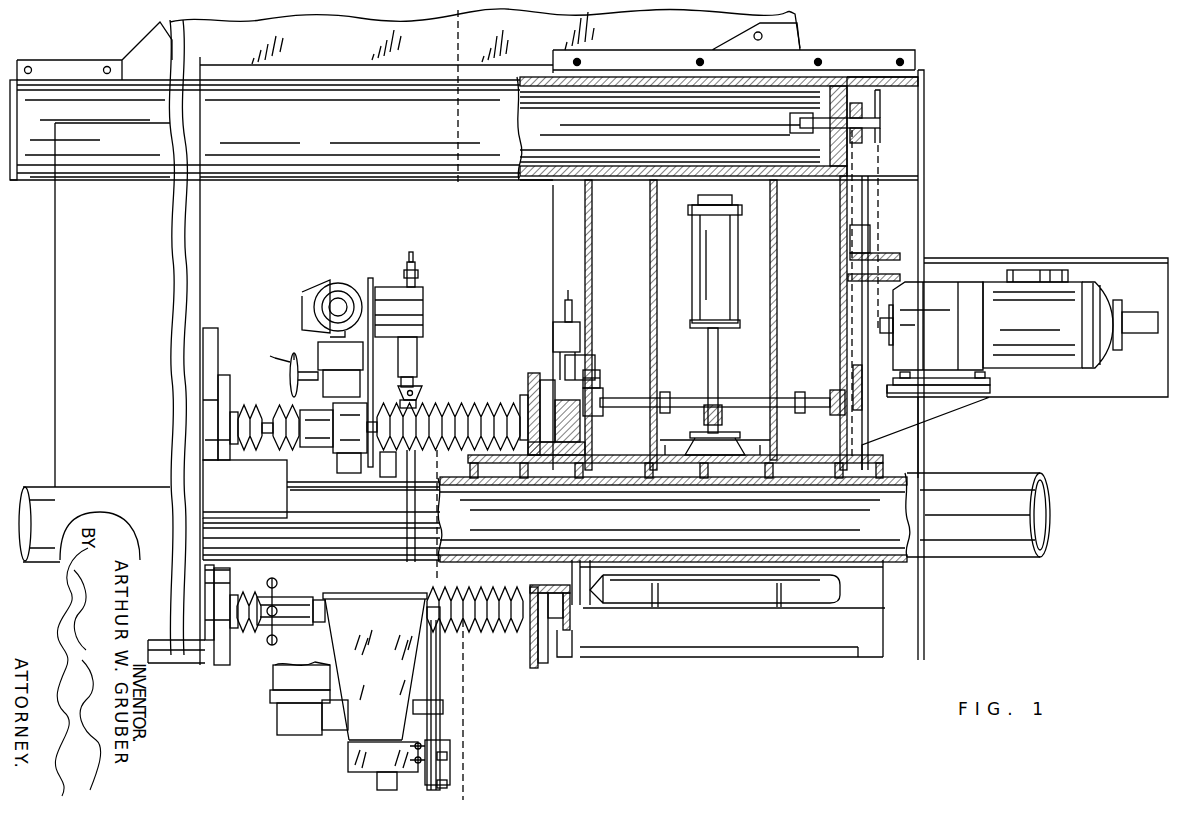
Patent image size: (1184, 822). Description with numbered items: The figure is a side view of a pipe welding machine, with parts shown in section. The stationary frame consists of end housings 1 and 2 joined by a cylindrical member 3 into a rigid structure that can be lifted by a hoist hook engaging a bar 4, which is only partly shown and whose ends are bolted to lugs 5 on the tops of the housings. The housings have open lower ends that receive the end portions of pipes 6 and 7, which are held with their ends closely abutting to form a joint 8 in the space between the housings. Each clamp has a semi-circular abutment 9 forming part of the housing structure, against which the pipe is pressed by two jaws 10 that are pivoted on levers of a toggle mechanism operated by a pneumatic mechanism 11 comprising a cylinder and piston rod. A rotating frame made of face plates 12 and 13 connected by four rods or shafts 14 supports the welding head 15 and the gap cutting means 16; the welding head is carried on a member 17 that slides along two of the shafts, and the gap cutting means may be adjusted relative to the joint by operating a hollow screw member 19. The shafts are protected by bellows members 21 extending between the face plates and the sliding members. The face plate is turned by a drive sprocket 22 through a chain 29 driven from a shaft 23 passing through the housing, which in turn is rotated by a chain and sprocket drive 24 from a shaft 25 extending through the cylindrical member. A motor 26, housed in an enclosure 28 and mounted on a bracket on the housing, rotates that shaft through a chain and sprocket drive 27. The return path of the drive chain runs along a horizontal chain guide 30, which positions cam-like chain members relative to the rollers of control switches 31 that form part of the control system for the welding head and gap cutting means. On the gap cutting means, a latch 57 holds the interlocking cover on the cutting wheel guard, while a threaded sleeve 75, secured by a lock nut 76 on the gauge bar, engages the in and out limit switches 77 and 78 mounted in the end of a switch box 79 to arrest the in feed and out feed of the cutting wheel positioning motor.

The end housing 1 is at (553, 240).
The end housing 2 is at (204, 236).
The cylindrical member 3 is at (410, 168).
The bar 4 is at (485, 36).
The lugs 5 is at (146, 62).
The pipe 6 is at (962, 480).
The pipe 7 is at (45, 488).
The joint 8 is at (405, 507).
The semi-circular abutment 9 is at (882, 456).
The jaws 10 is at (790, 597).
The pneumatic mechanism 11 is at (718, 355).
The face plate 12 is at (528, 375).
The face plate 13 is at (218, 378).
The rods or shafts 14 is at (265, 418).
The welding head 15 is at (407, 318).
The gap cutting means 16 is at (335, 738).
The member 17 is at (348, 445).
The hollow screw member 19 is at (290, 628).
The bellows members 21 is at (430, 410).
The drive sprocket 22 is at (566, 655).
The shaft 23 is at (805, 395).
The chain and sprocket drive 24 is at (856, 385).
The shaft 25 is at (885, 123).
The motor 26 is at (1038, 293).
The chain and sprocket drive 27 is at (868, 240).
The enclosure 28 is at (1118, 262).
The chain 29 is at (587, 365).
The horizontal chain guide 30 is at (550, 380).
The control switches 31 is at (555, 332).
The latch 57 is at (418, 712).
The sleeve 75 is at (445, 752).
The lock nut 76 is at (450, 784).
The in limit switch 77 is at (425, 775).
The out limit switch 78 is at (428, 750).
The switch box 79 is at (367, 760).